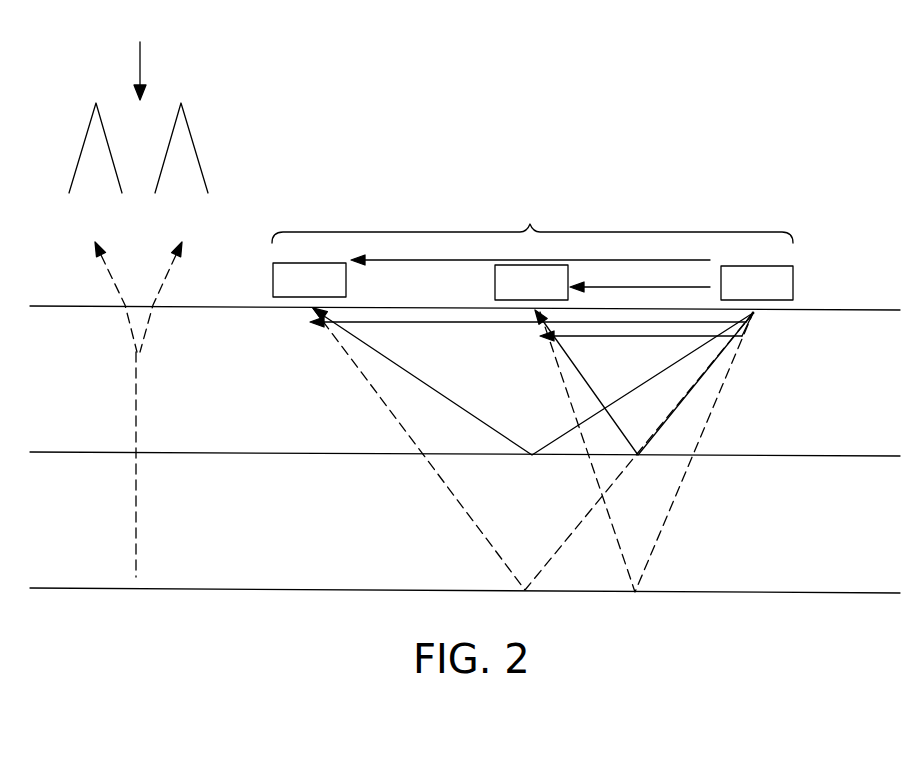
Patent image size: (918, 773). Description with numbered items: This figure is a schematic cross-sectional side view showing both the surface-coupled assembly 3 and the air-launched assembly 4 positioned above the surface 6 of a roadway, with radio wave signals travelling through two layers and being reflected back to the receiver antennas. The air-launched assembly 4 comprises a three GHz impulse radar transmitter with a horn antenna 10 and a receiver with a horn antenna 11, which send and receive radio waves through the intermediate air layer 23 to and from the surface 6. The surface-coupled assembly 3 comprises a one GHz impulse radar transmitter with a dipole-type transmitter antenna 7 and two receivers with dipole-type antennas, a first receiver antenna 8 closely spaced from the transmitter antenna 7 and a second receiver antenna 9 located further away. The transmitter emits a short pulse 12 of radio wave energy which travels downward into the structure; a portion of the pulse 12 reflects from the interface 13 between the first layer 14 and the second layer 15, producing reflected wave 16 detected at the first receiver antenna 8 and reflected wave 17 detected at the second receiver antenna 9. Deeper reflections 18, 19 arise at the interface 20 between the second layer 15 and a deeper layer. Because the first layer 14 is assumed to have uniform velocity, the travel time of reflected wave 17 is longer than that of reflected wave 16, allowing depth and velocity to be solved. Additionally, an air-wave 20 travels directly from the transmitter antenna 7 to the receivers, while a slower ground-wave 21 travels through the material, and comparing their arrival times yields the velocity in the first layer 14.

The air-launched assembly 4 is at (140, 57).
The horn antenna 10 is at (95, 148).
The horn antenna 11 is at (181, 148).
The surface 6 is at (40, 306).
The intermediate air layer 23 is at (162, 409).
The surface-coupled assembly 3 is at (532, 216).
The interface / air-wave 20 is at (423, 258).
The second receiver antenna 9 is at (302, 294).
The first receiver antenna 8 is at (524, 295).
The transmitter antenna 7 is at (749, 296).
The ground-wave 21 is at (384, 323).
The pulse 12 is at (749, 329).
The reflected wave 17 is at (410, 375).
The reflected wave 16 is at (583, 380).
The reflection 19 is at (447, 490).
The reflection 18 is at (677, 500).
The interface 13 is at (52, 452).
The first layer 14 is at (226, 396).
The second layer 15 is at (251, 533).